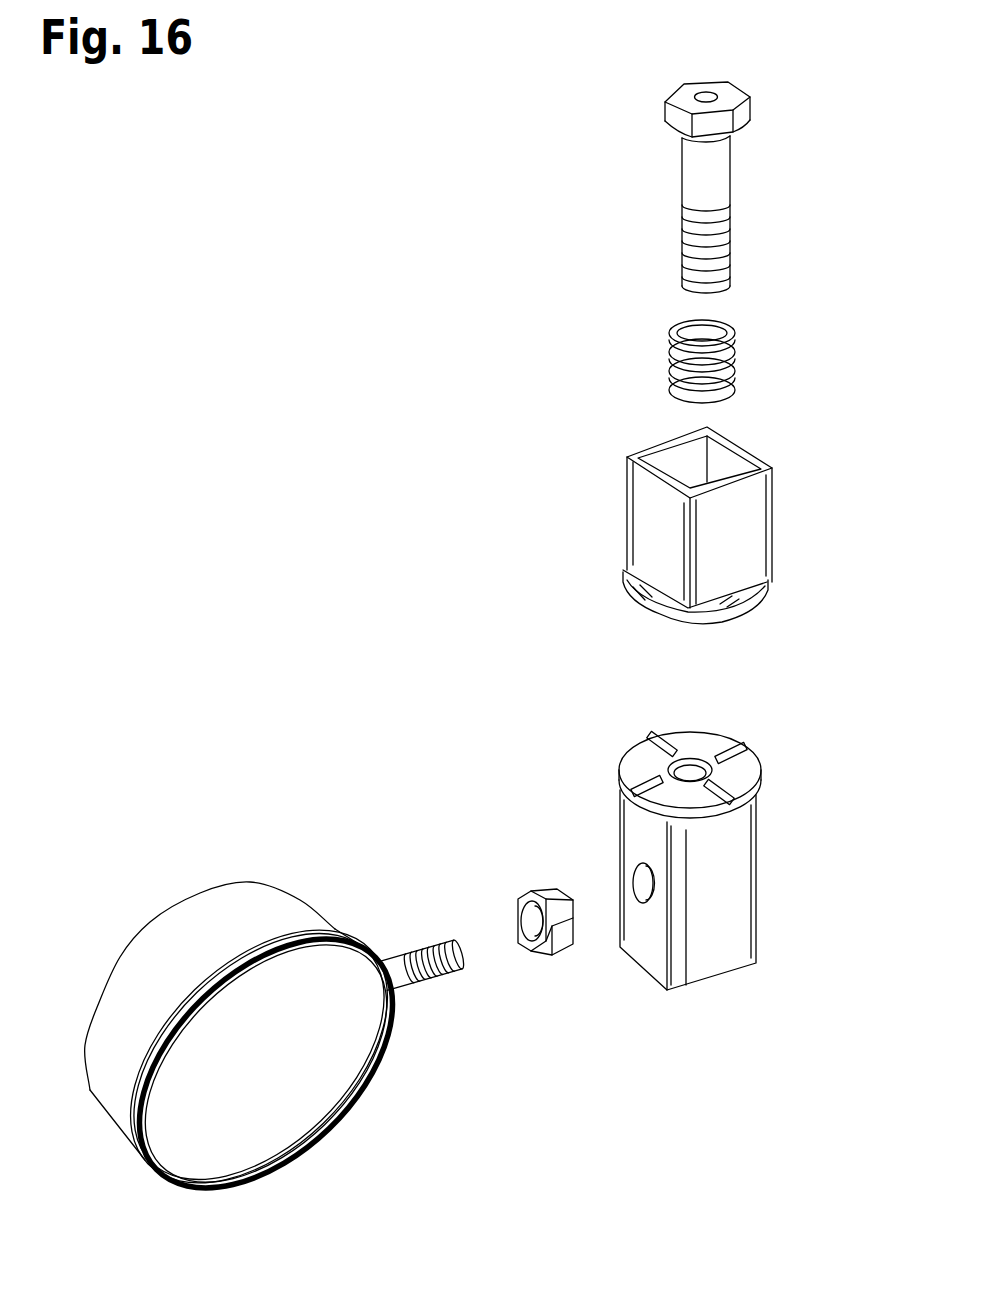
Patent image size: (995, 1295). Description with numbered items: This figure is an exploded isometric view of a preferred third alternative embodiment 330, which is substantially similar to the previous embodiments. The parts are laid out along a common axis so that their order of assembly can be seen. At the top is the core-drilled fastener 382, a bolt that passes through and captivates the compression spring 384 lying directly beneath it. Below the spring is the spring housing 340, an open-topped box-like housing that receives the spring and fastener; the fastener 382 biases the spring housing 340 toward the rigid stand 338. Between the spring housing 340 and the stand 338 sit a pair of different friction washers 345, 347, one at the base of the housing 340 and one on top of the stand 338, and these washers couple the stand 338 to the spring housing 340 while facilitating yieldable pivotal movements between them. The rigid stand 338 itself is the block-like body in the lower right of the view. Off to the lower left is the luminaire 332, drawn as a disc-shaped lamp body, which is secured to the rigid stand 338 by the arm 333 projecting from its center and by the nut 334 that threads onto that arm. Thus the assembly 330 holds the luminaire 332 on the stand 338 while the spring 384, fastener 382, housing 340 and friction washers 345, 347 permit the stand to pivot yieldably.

The third alternative embodiment 330 is at (403, 517).
The core-drilled fastener 382 is at (660, 205).
The compression spring 384 is at (660, 360).
The spring housing 340 is at (610, 497).
The friction washer 345 is at (622, 592).
The friction washer 347 is at (628, 767).
The rigid stand 338 is at (640, 995).
The nut 334 is at (535, 888).
The arm 333 is at (446, 976).
The luminaire 332 is at (273, 875).